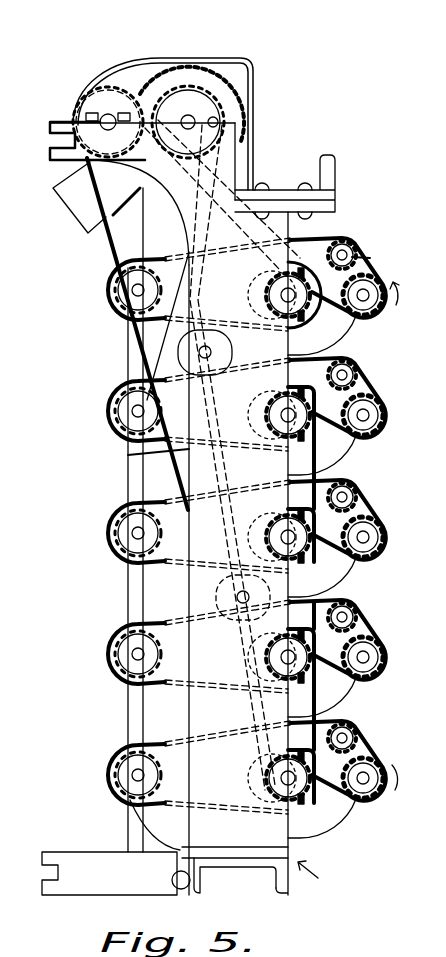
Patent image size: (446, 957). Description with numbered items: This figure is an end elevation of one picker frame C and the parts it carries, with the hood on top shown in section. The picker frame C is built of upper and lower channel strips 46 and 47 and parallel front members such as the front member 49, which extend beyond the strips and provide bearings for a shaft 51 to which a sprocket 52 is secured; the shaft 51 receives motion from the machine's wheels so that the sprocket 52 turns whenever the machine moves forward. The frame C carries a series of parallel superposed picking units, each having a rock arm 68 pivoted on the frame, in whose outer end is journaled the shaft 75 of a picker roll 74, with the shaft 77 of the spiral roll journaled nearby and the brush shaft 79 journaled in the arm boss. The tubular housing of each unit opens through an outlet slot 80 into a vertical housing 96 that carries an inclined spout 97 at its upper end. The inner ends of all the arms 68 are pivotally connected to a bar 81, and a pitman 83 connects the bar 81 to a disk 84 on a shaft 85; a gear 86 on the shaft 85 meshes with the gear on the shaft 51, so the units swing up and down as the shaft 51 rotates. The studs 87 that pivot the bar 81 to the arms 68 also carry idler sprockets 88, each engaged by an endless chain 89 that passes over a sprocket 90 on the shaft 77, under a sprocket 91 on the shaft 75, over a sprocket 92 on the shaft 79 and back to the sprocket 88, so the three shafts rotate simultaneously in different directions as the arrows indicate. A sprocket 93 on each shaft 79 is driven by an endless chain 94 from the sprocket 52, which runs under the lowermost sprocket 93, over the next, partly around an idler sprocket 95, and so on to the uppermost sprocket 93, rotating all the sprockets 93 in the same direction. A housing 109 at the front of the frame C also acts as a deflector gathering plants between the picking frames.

The upper channel strip 46 is at (282, 190).
The lower channel strip 47 is at (248, 868).
The front member 49 is at (128, 590).
The shaft 51 is at (104, 116).
The sprocket 52 is at (118, 105).
The rock arm 68 is at (178, 408).
The picker roll 74 is at (381, 797).
The shaft 75 is at (376, 289).
The shaft 77 is at (352, 248).
The shaft 79 is at (298, 310).
The outlet slot 80 is at (362, 756).
The bar 81 is at (140, 605).
The pitman 83 is at (180, 240).
The disk 84 is at (226, 96).
The shaft 85 is at (190, 114).
The gear 86 is at (254, 92).
The stud 87 is at (125, 305).
The idler sprocket 88 is at (130, 292).
The endless chain 89 is at (313, 242).
The sprocket 90 is at (372, 258).
The sprocket 91 is at (395, 307).
The sprocket 92 is at (258, 285).
The sprocket 93 is at (336, 446).
The endless chain 94 is at (150, 455).
The idler sprocket 95 is at (180, 353).
The vertical housing 96 is at (116, 798).
The spout 97 is at (74, 215).
The housing 109 is at (250, 141).
The picker frame C is at (318, 880).